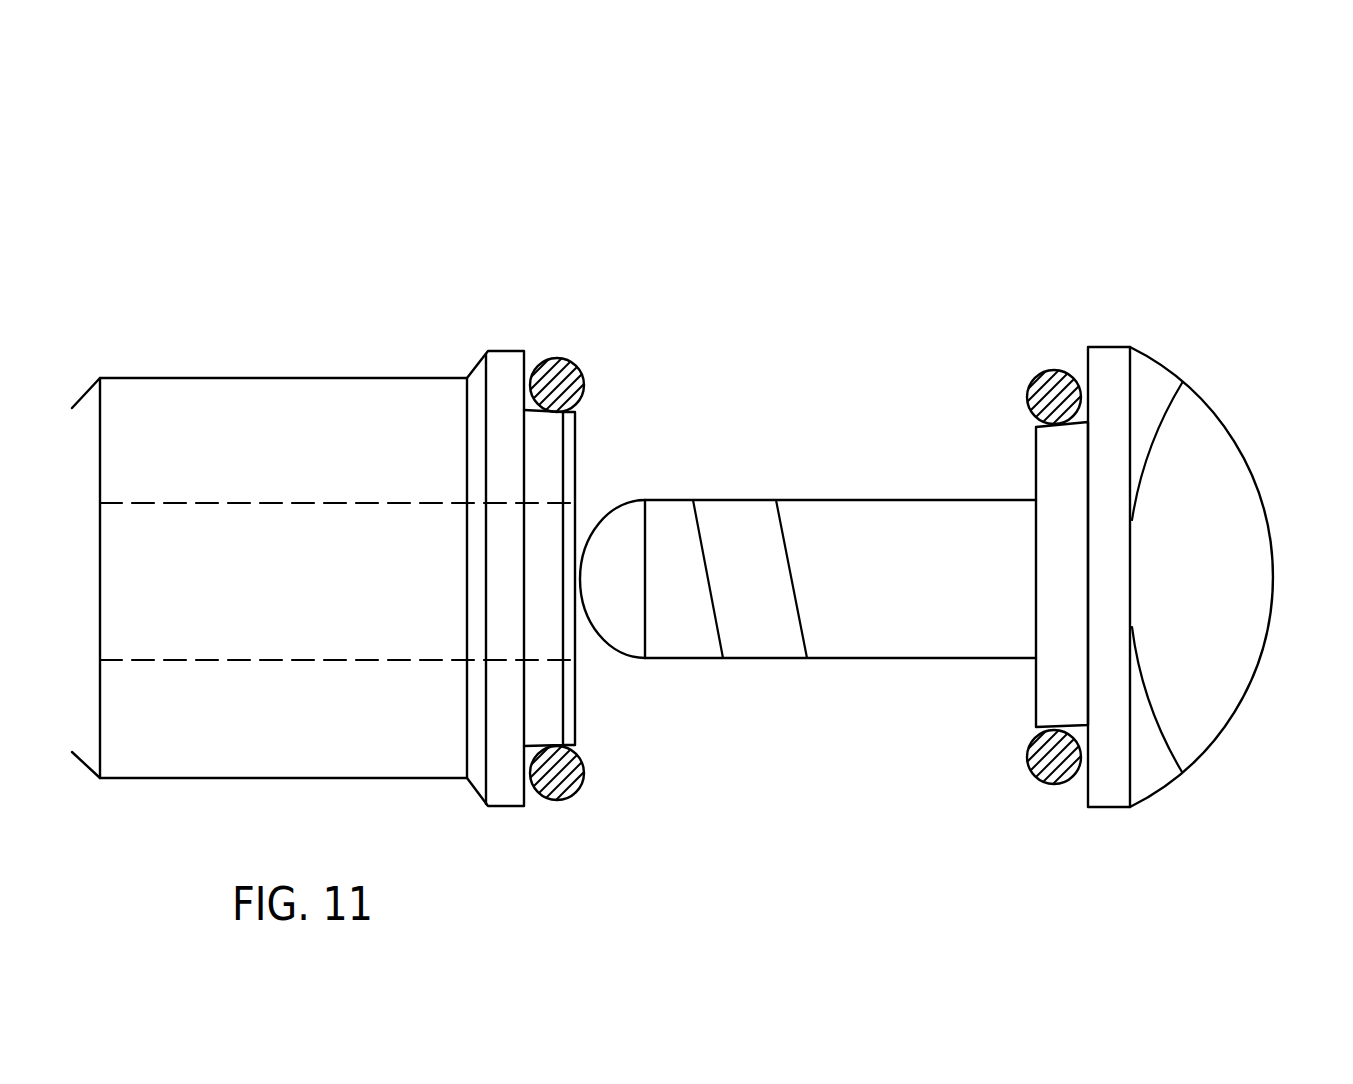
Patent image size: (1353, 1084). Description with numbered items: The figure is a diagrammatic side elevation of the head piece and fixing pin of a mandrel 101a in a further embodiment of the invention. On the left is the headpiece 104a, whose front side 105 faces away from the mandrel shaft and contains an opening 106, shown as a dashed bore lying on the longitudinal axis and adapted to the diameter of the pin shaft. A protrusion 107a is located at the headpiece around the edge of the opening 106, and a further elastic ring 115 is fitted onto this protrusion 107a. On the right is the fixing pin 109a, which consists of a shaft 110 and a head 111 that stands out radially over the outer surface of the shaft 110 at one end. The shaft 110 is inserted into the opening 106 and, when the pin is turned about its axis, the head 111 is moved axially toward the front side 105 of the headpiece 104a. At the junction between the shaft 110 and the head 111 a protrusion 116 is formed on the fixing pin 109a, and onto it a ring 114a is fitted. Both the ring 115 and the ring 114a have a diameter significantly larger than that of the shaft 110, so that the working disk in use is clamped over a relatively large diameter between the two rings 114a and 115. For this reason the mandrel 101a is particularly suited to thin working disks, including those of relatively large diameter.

The mandrel 101a is at (533, 268).
The headpiece 104a is at (267, 377).
The front side 105 is at (527, 352).
The elastic ring 115 is at (560, 387).
The opening 106 is at (330, 505).
The protrusion 107a is at (543, 463).
The shaft 110 is at (826, 530).
The fixing pin 109a is at (860, 670).
The protrusion 116 is at (1058, 462).
The ring 114a is at (1060, 368).
The head 111 is at (1225, 645).